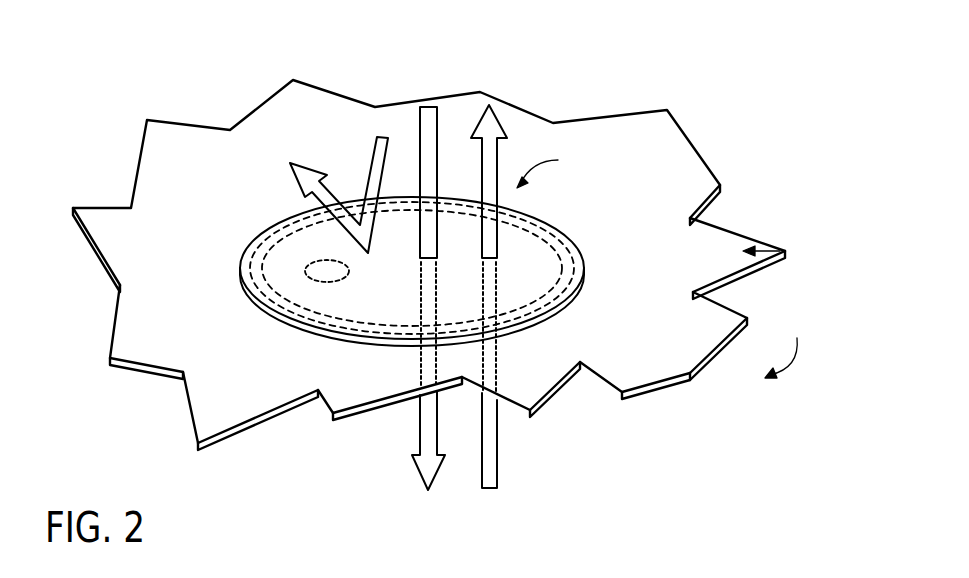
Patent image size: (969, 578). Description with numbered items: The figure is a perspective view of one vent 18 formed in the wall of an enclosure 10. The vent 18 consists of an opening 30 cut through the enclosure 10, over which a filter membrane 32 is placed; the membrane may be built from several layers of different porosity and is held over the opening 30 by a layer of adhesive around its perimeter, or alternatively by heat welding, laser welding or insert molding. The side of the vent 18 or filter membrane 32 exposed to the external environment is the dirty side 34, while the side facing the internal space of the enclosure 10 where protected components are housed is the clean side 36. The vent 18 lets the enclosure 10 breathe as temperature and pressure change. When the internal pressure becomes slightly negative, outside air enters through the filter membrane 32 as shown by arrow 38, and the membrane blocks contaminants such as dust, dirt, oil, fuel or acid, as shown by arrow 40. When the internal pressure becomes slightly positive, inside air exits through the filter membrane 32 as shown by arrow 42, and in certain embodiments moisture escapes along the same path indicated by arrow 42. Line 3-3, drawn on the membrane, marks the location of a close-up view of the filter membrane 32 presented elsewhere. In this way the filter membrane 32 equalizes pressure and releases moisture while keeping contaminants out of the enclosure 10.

The enclosure 10 is at (146, 198).
The line 3- 3 is at (303, 268).
The vent 18 is at (550, 167).
The opening 30 is at (585, 274).
The filter membrane 32 is at (567, 240).
The dirty side 34 is at (785, 262).
The clean side 36 is at (785, 345).
The arrow 38 is at (425, 105).
The arrow 40 is at (374, 138).
The arrow 42 is at (497, 440).